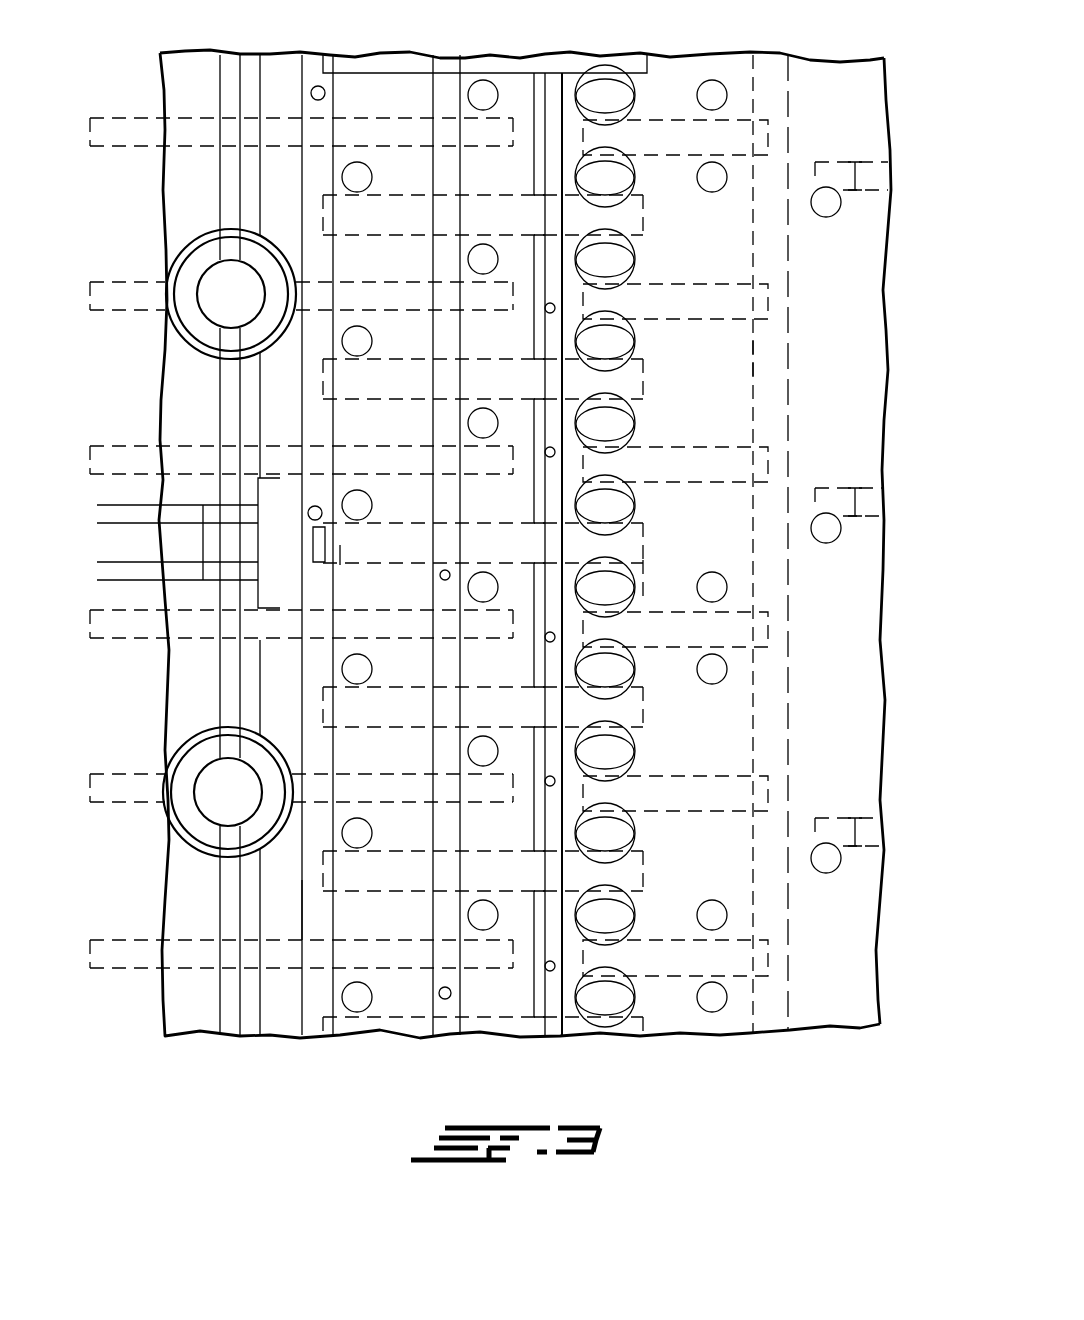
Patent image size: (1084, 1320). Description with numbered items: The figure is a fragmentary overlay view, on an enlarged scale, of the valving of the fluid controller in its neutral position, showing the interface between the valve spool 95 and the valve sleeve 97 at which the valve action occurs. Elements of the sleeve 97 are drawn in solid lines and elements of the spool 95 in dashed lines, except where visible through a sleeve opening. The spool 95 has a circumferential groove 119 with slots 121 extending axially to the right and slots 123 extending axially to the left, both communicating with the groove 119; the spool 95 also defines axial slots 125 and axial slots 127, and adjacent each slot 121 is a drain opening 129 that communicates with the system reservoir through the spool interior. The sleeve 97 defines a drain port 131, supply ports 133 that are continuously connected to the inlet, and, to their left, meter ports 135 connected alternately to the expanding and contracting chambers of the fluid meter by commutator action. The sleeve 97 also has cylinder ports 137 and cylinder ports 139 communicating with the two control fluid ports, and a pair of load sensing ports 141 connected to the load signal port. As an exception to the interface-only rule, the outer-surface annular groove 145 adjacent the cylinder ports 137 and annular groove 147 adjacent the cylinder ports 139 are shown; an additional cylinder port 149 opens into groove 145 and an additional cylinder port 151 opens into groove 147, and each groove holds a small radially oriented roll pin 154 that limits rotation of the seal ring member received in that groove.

The valve spool 95 is at (153, 998).
The valve sleeve 97 is at (768, 1041).
The circumferential groove 119 is at (762, 345).
The slots 121 is at (838, 545).
The slots 123 is at (666, 606).
The axial slots 125 is at (352, 548).
The axial slots 127 is at (150, 630).
The drain opening 129 is at (856, 506).
The drain port 131 is at (815, 208).
The supply ports 133 is at (717, 664).
The meter ports 135 is at (618, 428).
The cylinder ports 137 is at (468, 262).
The cylinder ports 139 is at (358, 162).
The load sensing ports 141 is at (546, 315).
The annular groove 145 is at (466, 424).
The annular groove 147 is at (318, 909).
The additional cylinder port 149 is at (445, 581).
The additional cylinder port 151 is at (315, 505).
The roll pin 154 is at (318, 85).